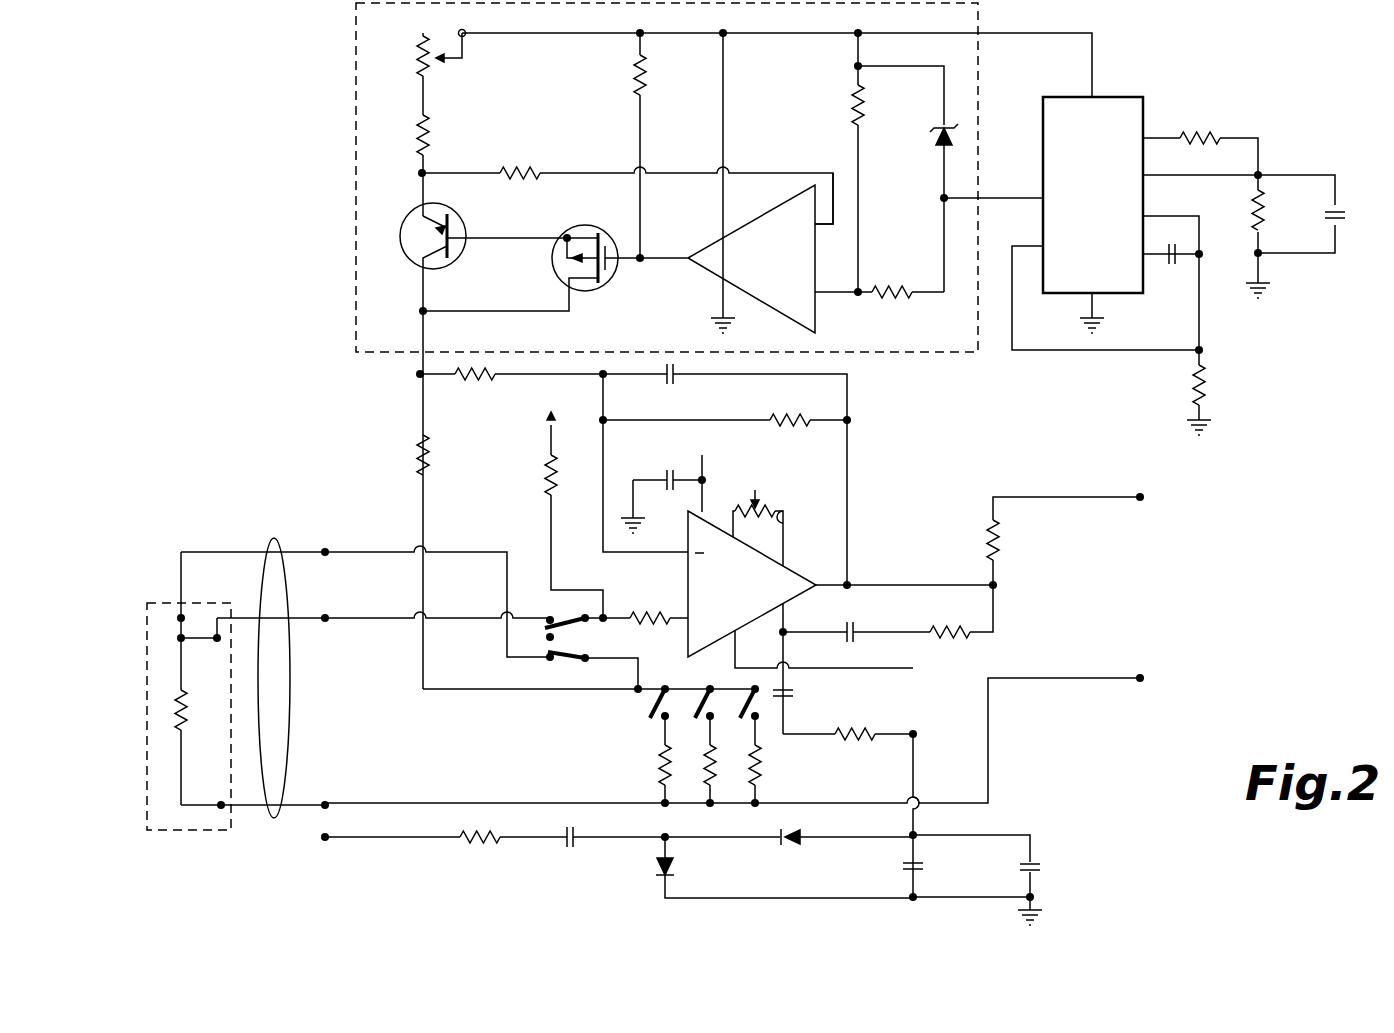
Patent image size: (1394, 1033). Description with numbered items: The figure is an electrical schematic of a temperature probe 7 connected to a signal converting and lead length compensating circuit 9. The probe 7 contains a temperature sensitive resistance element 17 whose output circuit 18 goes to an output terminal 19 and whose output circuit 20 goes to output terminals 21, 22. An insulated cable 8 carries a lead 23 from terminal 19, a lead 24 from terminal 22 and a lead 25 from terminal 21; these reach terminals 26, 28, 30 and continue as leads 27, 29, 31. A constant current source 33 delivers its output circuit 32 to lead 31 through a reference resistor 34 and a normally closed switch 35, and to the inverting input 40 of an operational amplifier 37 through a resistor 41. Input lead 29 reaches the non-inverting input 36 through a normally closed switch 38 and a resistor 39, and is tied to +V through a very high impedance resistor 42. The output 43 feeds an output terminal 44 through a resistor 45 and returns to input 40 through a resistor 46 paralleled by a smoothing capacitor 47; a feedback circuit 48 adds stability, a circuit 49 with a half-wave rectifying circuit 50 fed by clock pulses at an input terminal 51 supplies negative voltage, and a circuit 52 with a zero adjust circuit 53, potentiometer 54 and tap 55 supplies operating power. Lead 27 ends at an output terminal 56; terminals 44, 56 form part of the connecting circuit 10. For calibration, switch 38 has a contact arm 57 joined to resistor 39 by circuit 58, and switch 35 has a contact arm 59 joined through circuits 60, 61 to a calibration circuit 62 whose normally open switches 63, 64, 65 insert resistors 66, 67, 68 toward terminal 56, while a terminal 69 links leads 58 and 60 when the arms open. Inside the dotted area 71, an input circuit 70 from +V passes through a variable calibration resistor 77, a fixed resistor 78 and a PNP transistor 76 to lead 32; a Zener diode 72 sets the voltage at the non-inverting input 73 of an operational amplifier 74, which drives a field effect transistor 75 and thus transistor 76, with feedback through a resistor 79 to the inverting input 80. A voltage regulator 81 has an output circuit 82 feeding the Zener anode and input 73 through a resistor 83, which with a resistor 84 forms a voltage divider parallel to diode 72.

The temperature probe 7 is at (164, 709).
The cable 8 is at (276, 540).
The signal converting and compensating circuit 9 is at (343, 859).
The connecting circuit 10 is at (1146, 700).
The temperature sensitive resistance element 17 is at (178, 718).
The output circuit 18 is at (182, 772).
The output terminal 19 is at (218, 804).
The output circuit 20 is at (178, 663).
The output terminal 21 is at (176, 621).
The output terminal 22 is at (215, 650).
The lead 23 is at (320, 803).
The lead 24 is at (318, 616).
The lead 25 is at (318, 550).
The terminal 26 is at (330, 804).
The lead 27 is at (456, 802).
The terminal 28 is at (328, 625).
The input lead 29 is at (384, 616).
The terminal 30 is at (328, 558).
The lead 31 is at (395, 550).
The output circuit 32 is at (416, 362).
The constant current source 33 is at (609, 177).
The reference resistor 34 is at (415, 445).
The normally closed switch 35 is at (551, 668).
The non-inverting input 36 is at (676, 614).
The operational amplifier 37 is at (744, 622).
The normally closed switch 38 is at (548, 615).
The resistor 39 is at (648, 623).
The inverting input 40 is at (672, 560).
The resistor 41 is at (482, 380).
The very high impedance resistor 42 is at (546, 471).
The output 43 is at (938, 572).
The output terminal 44 is at (1148, 500).
The resistor 45 is at (999, 540).
The resistor 46 is at (792, 425).
The smoothing capacitor 47 is at (678, 378).
The feedback circuit 48 is at (1008, 638).
The circuit 49 is at (934, 684).
The half-wave rectifying circuit 50 is at (649, 896).
The input terminal 51 is at (322, 840).
The circuit 52 is at (665, 455).
The zero adjust circuit 53 is at (780, 495).
The variable potentiometer 54 is at (790, 518).
The variable tap 55 is at (753, 493).
The output terminal 56 is at (1148, 676).
The contact arm 57 is at (587, 622).
The circuit 58 is at (590, 612).
The contact arm 59 is at (580, 655).
The electrical circuit 60 is at (636, 672).
The electrical circuit 61 is at (498, 692).
The calibration circuit 62 is at (673, 707).
The switch 63 is at (645, 710).
The switch 64 is at (694, 714).
The switch 65 is at (742, 716).
The calibration resistor 66 is at (660, 765).
The resistor 67 is at (706, 774).
The resistor 68 is at (760, 764).
The terminal 69 is at (545, 638).
The input circuit 70 is at (636, 30).
The constant current source 71 is at (367, 33).
The Zener diode 72 is at (940, 148).
The non-inverting input 73 is at (842, 296).
The operational amplifier 74 is at (777, 297).
The field effect transistor 75 is at (586, 225).
The PNP type transistor 76 is at (456, 218).
The variable calibration resistor 77 is at (432, 62).
The fixed resistor 78 is at (432, 137).
The resistor 79 is at (523, 172).
The inverting input 80 is at (832, 228).
The constant current source 81 is at (1128, 98).
The output circuit 82 is at (1012, 196).
The resistor 83 is at (896, 288).
The resistor 84 is at (854, 106).